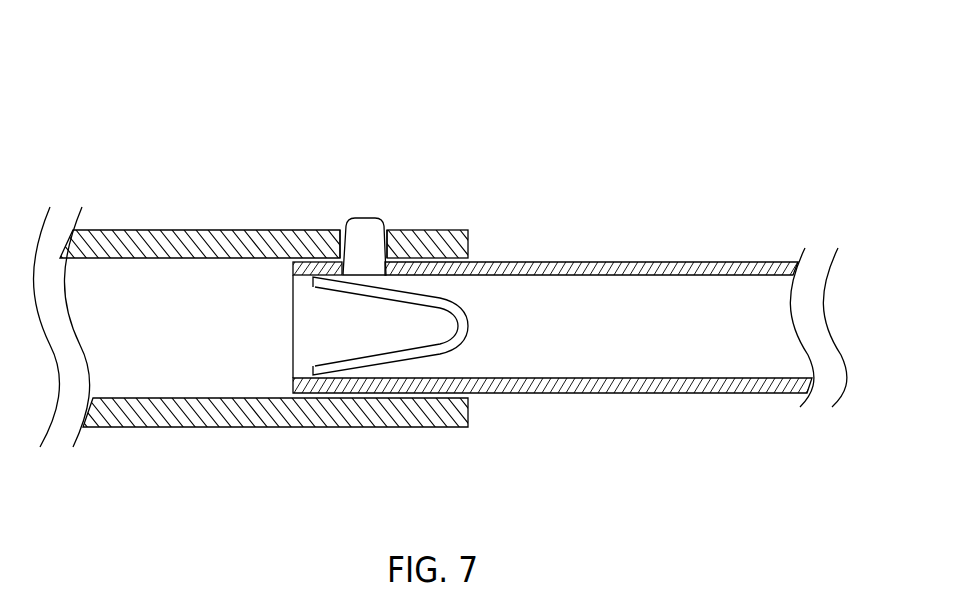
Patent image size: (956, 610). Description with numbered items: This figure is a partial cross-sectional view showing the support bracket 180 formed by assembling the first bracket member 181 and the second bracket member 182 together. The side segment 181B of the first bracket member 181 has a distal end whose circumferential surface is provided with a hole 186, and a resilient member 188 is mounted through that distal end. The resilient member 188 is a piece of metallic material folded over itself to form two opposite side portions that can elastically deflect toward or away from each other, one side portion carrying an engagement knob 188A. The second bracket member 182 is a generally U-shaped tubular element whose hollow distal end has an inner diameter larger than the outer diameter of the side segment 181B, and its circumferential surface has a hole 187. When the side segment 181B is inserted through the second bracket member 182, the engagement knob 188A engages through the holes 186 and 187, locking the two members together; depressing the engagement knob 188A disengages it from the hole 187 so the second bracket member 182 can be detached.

The support bracket 180 is at (543, 82).
The first bracket member 181 is at (566, 289).
The side segment 181B is at (603, 267).
The second bracket member 182 is at (163, 218).
The hole 186 is at (390, 278).
The hole 187 is at (341, 228).
The resilient member 188 is at (469, 326).
The engagement knob 188A is at (367, 233).